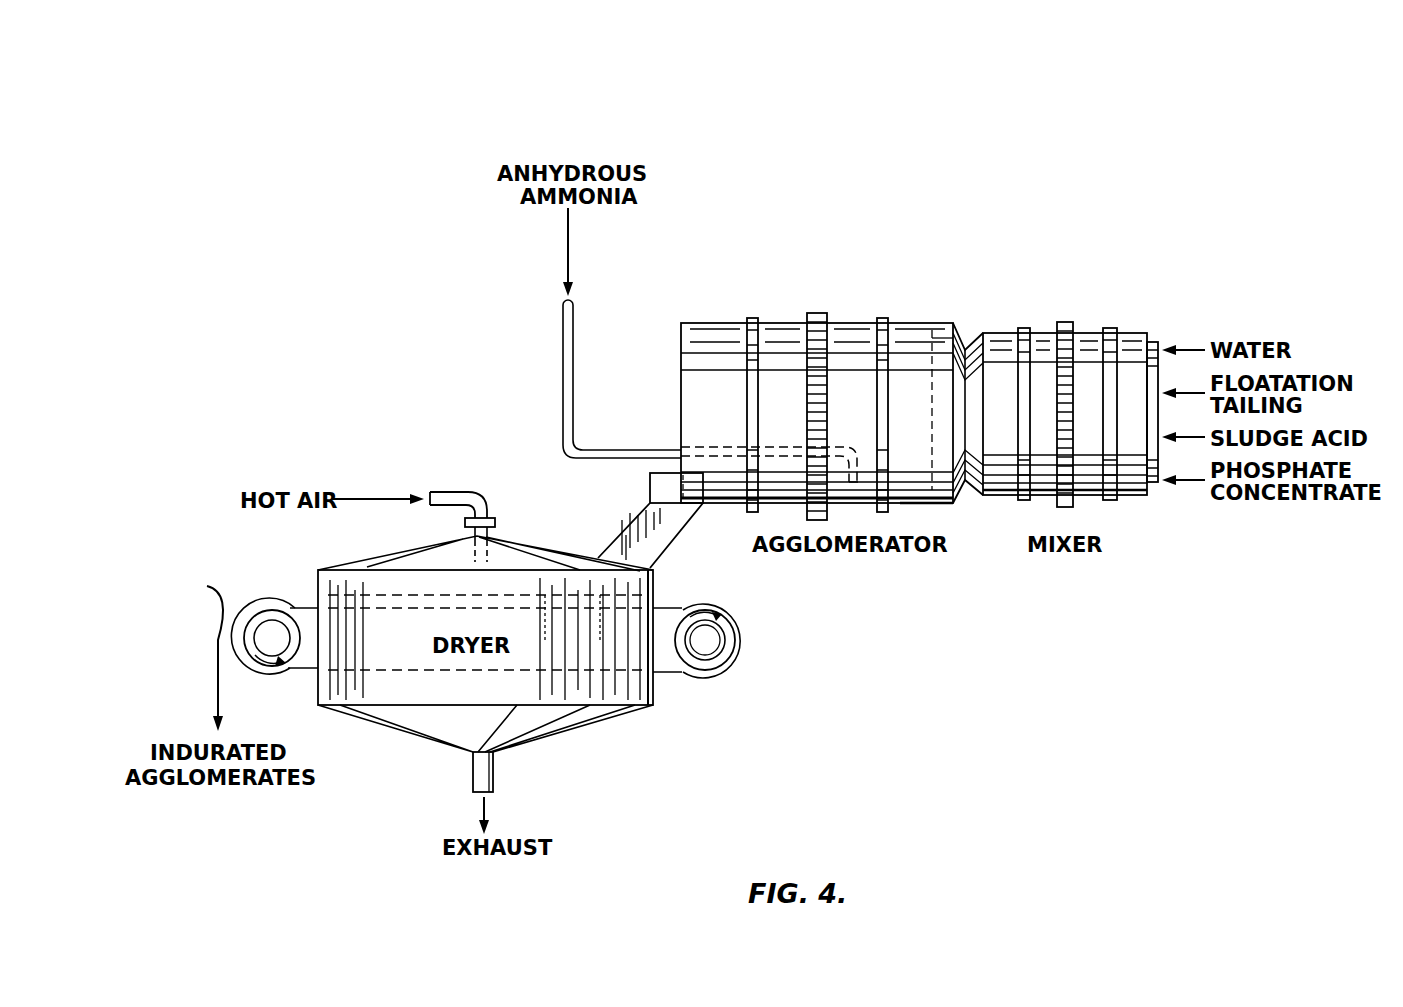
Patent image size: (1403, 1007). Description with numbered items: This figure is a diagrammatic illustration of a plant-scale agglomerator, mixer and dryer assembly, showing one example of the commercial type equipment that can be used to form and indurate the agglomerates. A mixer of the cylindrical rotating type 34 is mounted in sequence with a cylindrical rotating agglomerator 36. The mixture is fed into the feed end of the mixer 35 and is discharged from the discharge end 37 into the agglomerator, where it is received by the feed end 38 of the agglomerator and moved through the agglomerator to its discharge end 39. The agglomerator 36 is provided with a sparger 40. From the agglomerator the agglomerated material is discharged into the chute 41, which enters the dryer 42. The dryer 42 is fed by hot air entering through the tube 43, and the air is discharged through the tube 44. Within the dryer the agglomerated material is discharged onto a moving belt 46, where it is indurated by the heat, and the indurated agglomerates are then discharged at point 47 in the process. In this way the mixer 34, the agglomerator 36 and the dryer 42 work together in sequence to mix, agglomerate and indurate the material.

The mixer 34 is at (1093, 350).
The feed end of the mixer 35 is at (1163, 347).
The agglomerator 36 is at (853, 345).
The discharge end 37 is at (965, 350).
The feed end 38 is at (958, 500).
The discharge end 39 is at (681, 390).
The sparger 40 is at (870, 477).
The chute 41 is at (630, 523).
The dryer 42 is at (545, 542).
The tube 43 is at (457, 492).
The tube 44 is at (495, 777).
The moving belt 46 is at (676, 672).
The point 47 is at (197, 652).